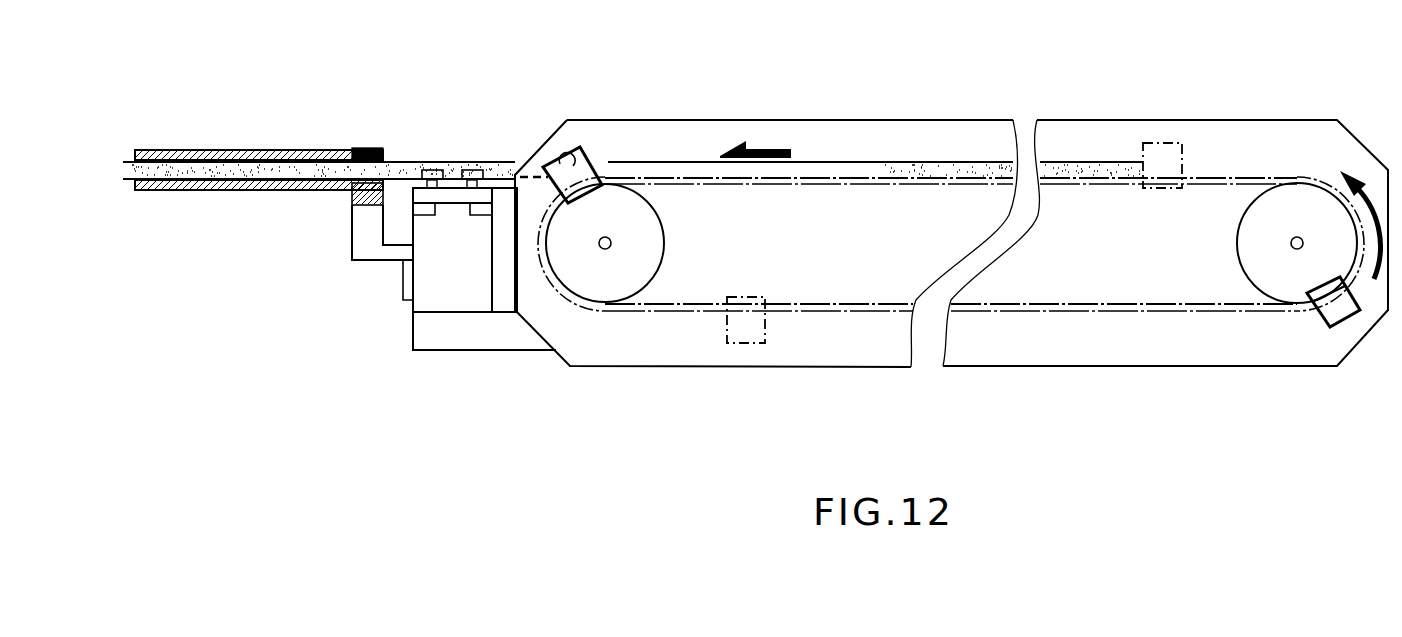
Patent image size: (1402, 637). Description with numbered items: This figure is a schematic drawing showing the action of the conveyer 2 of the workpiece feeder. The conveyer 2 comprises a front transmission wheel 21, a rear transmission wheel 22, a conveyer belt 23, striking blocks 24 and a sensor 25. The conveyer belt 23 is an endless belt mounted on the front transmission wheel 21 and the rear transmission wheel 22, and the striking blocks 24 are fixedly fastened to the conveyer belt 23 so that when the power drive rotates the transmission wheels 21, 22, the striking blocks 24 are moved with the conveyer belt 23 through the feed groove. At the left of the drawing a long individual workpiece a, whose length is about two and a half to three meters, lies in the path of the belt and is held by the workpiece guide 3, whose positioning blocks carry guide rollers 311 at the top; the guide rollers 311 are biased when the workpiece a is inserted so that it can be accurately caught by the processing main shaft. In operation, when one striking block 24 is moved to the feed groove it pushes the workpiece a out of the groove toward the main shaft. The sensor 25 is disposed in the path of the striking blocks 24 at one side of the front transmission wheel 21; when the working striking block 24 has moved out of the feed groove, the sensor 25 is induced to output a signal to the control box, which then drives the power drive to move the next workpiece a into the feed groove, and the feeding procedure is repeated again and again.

The individual workpiece a is at (284, 164).
The conveyer 2 is at (1076, 312).
The workpiece guide 3 is at (430, 250).
The guide rollers 311 is at (428, 166).
The front transmission wheel 21 is at (588, 288).
The rear transmission wheel 22 is at (1283, 277).
The conveyer belt 23 is at (861, 312).
The striking blocks 24 is at (578, 148).
The sensor 25 is at (547, 150).